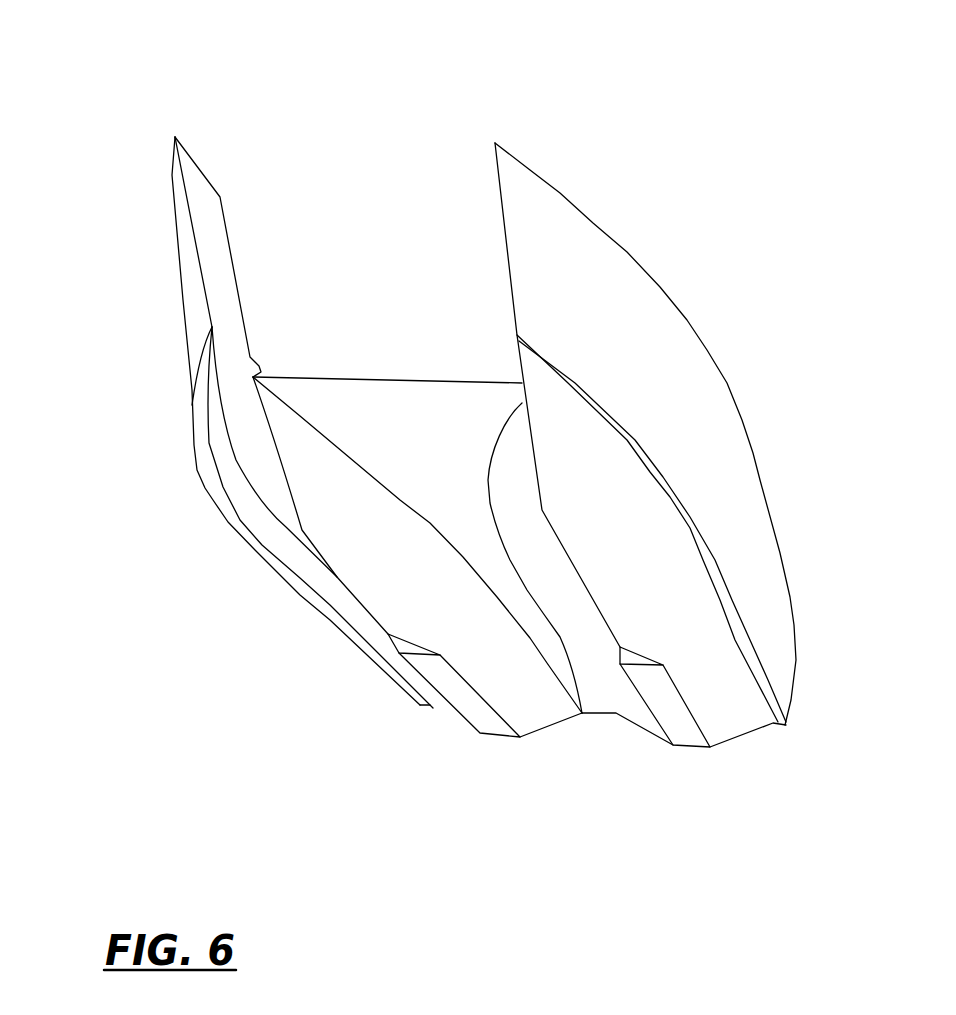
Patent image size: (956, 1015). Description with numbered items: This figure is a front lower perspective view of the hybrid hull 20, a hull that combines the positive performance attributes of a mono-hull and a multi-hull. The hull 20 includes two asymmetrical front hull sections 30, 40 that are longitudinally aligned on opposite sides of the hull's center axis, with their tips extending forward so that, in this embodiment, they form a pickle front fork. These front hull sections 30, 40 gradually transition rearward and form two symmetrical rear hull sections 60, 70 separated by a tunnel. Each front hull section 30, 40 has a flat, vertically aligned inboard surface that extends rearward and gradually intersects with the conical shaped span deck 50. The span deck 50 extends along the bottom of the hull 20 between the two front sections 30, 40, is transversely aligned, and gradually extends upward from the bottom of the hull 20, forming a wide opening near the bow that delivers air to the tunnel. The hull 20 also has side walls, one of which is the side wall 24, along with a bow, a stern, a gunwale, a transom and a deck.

The hybrid hull 20 is at (152, 85).
The side wall 24 is at (372, 84).
The front hull section 30 is at (177, 469).
The front hull section 40 is at (607, 458).
The span deck 50 is at (400, 378).
The rear hull section 60 is at (426, 727).
The rear hull section 70 is at (684, 770).